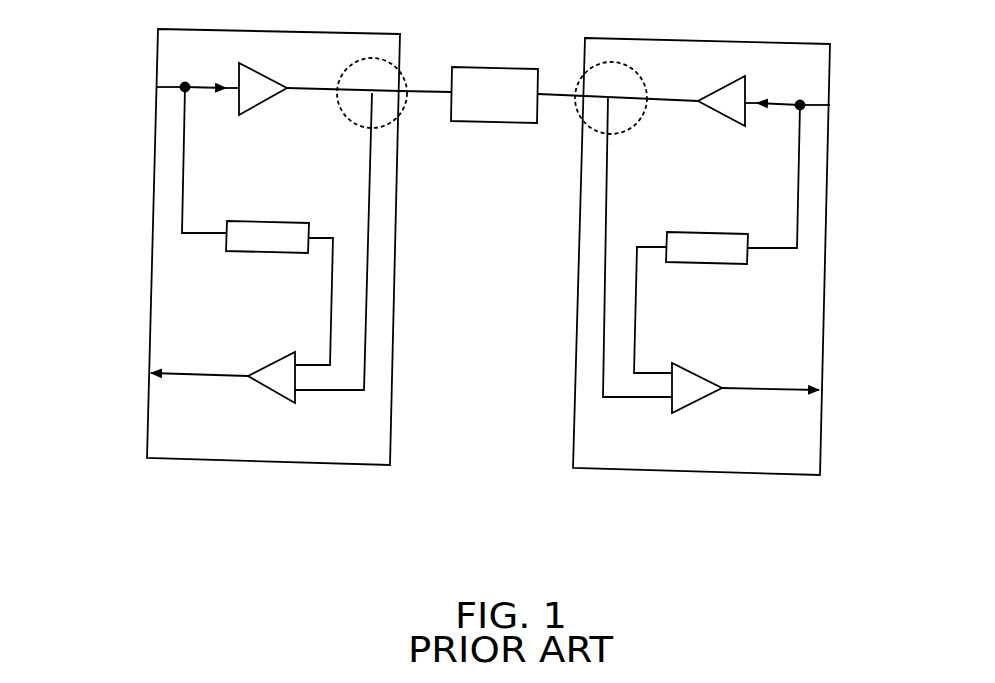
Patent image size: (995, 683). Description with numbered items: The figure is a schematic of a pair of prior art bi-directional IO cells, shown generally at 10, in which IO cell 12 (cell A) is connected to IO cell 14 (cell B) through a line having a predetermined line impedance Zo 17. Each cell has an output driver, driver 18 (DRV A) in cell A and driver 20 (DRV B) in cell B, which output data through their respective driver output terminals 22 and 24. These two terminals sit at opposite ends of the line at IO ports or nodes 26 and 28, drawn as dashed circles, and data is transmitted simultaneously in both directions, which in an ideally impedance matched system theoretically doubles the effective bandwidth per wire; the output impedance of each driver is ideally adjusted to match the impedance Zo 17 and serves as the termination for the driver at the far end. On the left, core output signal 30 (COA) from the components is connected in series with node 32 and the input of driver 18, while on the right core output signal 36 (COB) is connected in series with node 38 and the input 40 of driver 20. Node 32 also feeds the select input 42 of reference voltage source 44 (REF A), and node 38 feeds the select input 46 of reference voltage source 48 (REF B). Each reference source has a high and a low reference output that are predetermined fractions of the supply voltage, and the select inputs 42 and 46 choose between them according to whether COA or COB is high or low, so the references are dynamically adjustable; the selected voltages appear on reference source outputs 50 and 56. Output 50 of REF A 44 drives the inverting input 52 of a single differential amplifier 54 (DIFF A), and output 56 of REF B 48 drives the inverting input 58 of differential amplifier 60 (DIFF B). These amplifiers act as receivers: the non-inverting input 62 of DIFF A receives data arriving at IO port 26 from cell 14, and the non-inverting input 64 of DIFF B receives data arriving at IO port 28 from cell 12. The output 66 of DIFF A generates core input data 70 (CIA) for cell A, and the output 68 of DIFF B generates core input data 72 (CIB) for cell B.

The pair of bi-directional IO cells 10 is at (412, 532).
The IO cell 12 is at (197, 467).
The IO cell 14 is at (722, 481).
The line impedance Zo 17 is at (481, 67).
The output driver 18 is at (277, 66).
The output driver 20 is at (723, 85).
The driver output terminal 22 is at (292, 87).
The driver output terminal 24 is at (690, 100).
The IO port 26 is at (402, 93).
The IO port 28 is at (582, 96).
The core output signal 30 is at (103, 66).
The node 32 is at (185, 86).
The core output signal 36 is at (865, 93).
The node 38 is at (802, 104).
The input of driver 40 is at (750, 100).
The select input 42 is at (222, 230).
The reference voltage source 44 is at (268, 222).
The select input 46 is at (750, 252).
The reference voltage source 48 is at (698, 233).
The reference source output 50 is at (310, 251).
The inverting input 52 is at (297, 363).
The differential amplifier 54 is at (272, 389).
The reference source output 56 is at (667, 245).
The inverting input 58 is at (672, 364).
The differential amplifier 60 is at (698, 402).
The non-inverting input 62 is at (299, 396).
The non-inverting input 64 is at (670, 402).
The output of differential amplifier 66 is at (248, 375).
The output of differential amplifier 68 is at (710, 385).
The core input data 70 is at (118, 387).
The core input data 72 is at (862, 373).